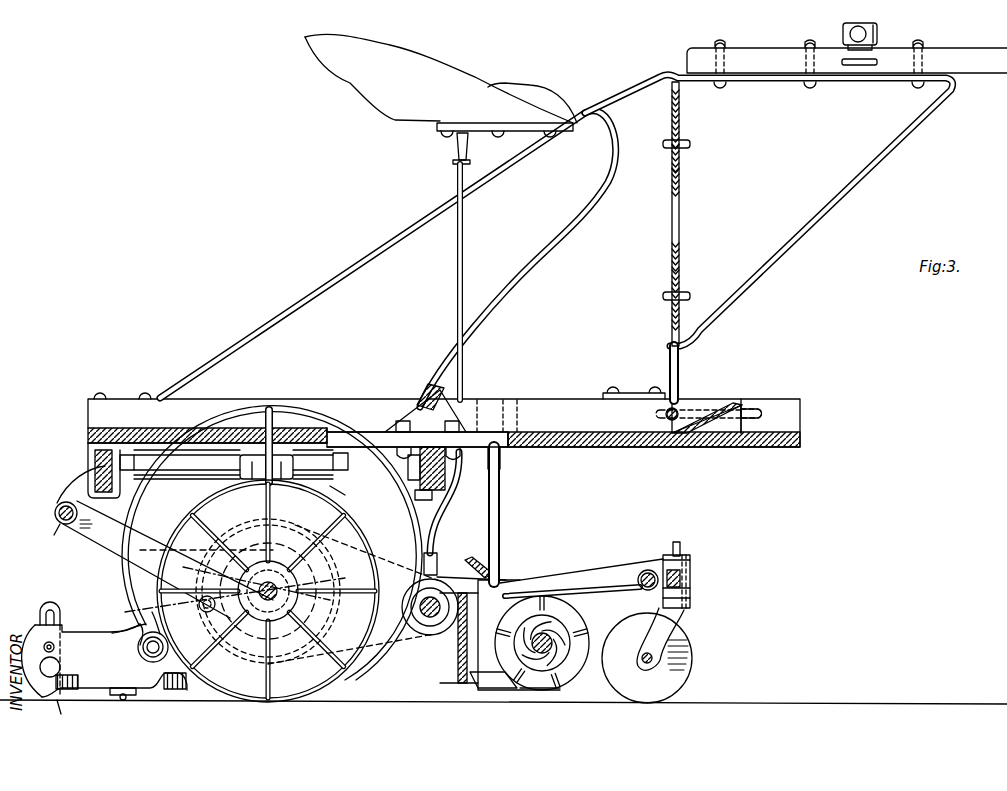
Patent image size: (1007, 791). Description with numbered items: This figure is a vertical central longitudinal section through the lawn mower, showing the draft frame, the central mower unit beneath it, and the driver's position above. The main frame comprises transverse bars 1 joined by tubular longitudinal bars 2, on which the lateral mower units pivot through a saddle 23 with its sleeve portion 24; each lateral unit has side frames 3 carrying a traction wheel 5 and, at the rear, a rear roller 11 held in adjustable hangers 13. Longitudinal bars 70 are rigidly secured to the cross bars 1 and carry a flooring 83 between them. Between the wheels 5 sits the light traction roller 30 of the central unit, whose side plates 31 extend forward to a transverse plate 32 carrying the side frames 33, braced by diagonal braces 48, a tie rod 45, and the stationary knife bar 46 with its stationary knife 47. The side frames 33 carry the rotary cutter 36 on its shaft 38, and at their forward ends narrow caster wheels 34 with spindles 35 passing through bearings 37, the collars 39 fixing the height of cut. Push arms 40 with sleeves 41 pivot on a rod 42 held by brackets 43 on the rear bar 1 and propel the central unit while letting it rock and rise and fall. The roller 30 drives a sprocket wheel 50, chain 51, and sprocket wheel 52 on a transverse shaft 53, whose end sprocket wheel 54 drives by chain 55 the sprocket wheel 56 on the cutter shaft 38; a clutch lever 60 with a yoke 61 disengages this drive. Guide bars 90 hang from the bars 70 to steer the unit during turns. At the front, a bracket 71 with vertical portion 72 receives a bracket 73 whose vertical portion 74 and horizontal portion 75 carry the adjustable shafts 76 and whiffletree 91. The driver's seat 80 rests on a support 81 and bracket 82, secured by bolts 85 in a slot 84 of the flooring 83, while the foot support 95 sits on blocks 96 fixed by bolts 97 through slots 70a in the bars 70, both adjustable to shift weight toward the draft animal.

The bars 1 is at (93, 458).
The bars 2 is at (166, 483).
The side frames 3 is at (120, 648).
The traction wheel 5 is at (268, 409).
The rear roller 11 is at (55, 716).
The hangers 13 is at (50, 609).
The saddle 23 is at (347, 496).
The sleeve portion 24 is at (242, 457).
The traction roller 30 is at (296, 597).
The side plates 31 is at (393, 681).
The transverse plate 32 is at (468, 641).
The side frames 33 is at (608, 573).
The caster wheels 34 is at (687, 684).
The spindles 35 is at (681, 549).
The rotary cutter 36 is at (578, 662).
The bearings 37 is at (691, 566).
The shaft 38 is at (547, 650).
The collars 39 is at (691, 583).
The push arms 40 is at (113, 541).
The sleeves 41 is at (54, 513).
The rod 42 is at (47, 536).
The brackets 43 is at (78, 489).
The tie rod 45 is at (651, 571).
The stationary knife bar 46 is at (487, 693).
The stationary knife 47 is at (540, 670).
The diagonal braces 48 is at (572, 590).
The sprocket wheel 50 is at (248, 661).
The chain 51 is at (308, 661).
The sprocket wheel 52 is at (432, 629).
The transverse shaft 53 is at (441, 633).
The sprocket wheel 54 is at (486, 566).
The chain 55 is at (498, 578).
The sprocket wheel 56 is at (569, 629).
The clutch lever 60 is at (467, 253).
The yoke 61 is at (448, 563).
The longitudinal bars 70 is at (797, 414).
The slots 70a is at (770, 410).
The bracket 71 is at (397, 247).
The vertically disposed portion 72 is at (676, 372).
The bracket 73 is at (834, 223).
The vertically disposed portion 74 is at (682, 194).
The horizontal portion 75 is at (795, 80).
The shafts 76 is at (968, 58).
The driver's seat 80 is at (478, 83).
The support 81 is at (534, 258).
The bracket 82 is at (456, 392).
The flooring 83 is at (610, 447).
The slot 84 is at (356, 430).
The bolts 85 is at (404, 420).
The guide bars 90 is at (489, 520).
The whiffletree 91 is at (880, 35).
The foot support 95 is at (735, 405).
The blocks 96 is at (745, 433).
The bolts 97 is at (668, 408).